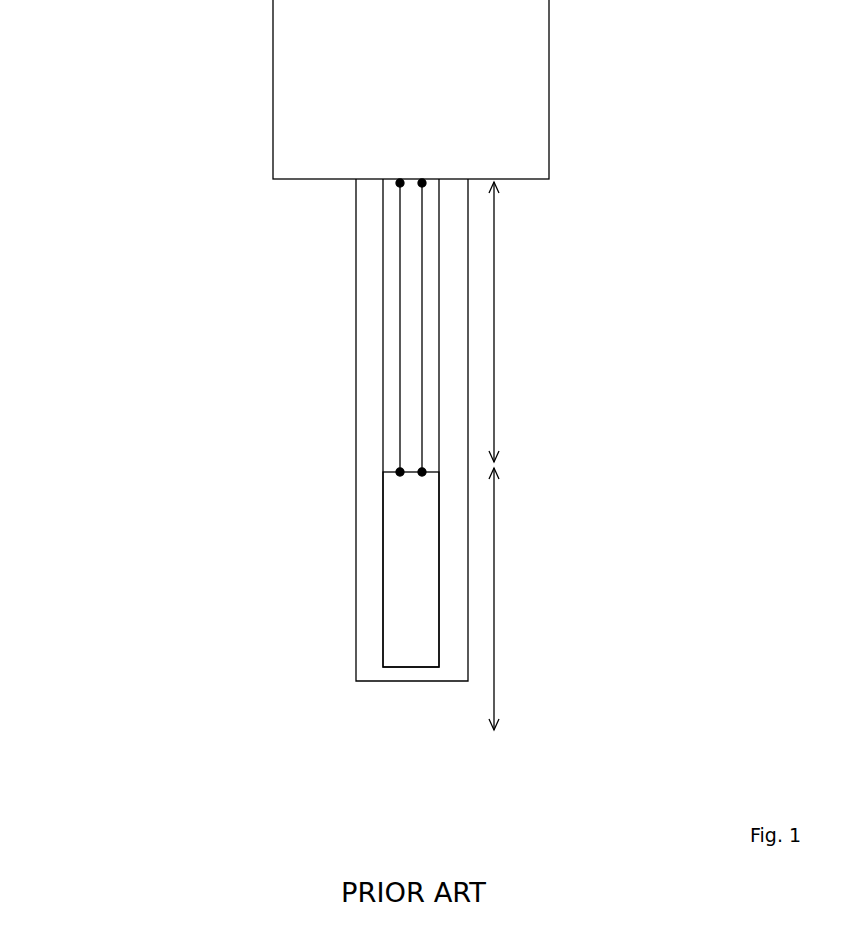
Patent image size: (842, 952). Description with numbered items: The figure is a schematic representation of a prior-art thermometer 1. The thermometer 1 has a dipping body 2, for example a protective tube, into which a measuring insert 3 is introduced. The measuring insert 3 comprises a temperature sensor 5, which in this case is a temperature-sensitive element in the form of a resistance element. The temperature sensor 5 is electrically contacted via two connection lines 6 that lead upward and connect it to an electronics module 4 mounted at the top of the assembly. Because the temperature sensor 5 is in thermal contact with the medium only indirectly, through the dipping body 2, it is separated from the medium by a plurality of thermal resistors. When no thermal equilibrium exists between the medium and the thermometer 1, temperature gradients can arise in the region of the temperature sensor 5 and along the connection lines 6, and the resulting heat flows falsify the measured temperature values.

The thermometer 1 is at (22, 1).
The dipping body 2 is at (353, 252).
The measuring insert 3 is at (382, 312).
The electronics module 4 is at (411, 89).
The temperature sensor 5 is at (411, 569).
The connection lines 6 is at (413, 390).